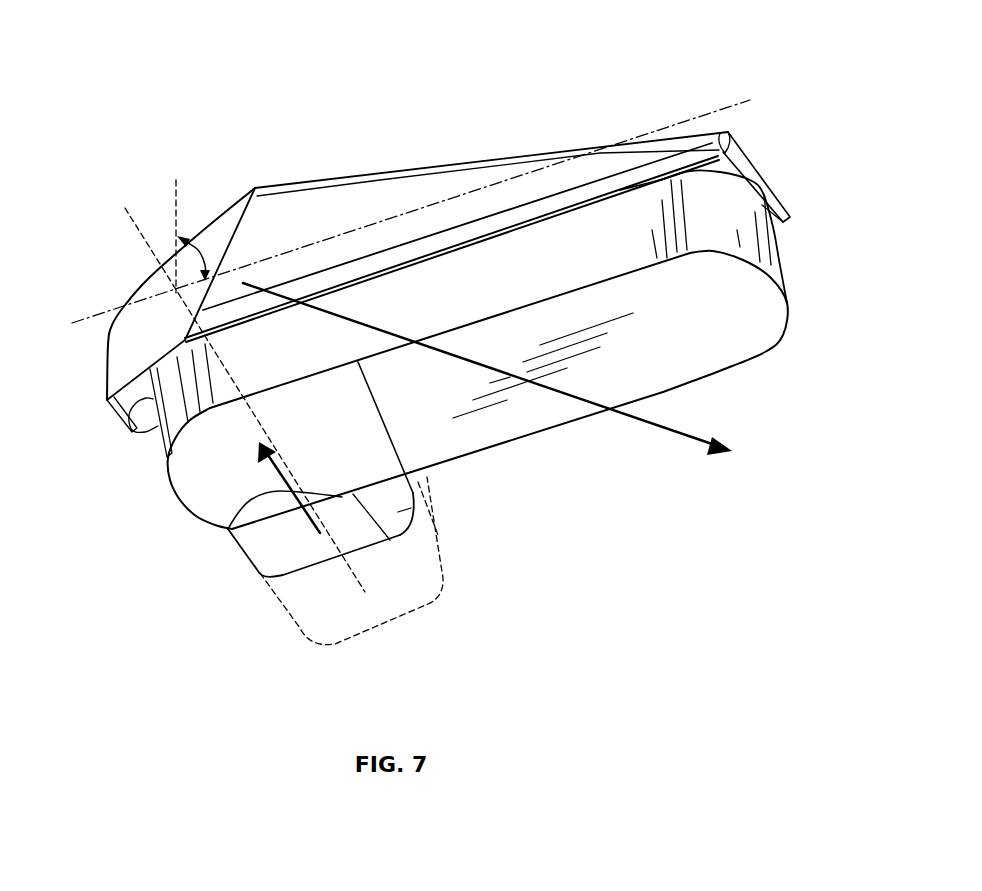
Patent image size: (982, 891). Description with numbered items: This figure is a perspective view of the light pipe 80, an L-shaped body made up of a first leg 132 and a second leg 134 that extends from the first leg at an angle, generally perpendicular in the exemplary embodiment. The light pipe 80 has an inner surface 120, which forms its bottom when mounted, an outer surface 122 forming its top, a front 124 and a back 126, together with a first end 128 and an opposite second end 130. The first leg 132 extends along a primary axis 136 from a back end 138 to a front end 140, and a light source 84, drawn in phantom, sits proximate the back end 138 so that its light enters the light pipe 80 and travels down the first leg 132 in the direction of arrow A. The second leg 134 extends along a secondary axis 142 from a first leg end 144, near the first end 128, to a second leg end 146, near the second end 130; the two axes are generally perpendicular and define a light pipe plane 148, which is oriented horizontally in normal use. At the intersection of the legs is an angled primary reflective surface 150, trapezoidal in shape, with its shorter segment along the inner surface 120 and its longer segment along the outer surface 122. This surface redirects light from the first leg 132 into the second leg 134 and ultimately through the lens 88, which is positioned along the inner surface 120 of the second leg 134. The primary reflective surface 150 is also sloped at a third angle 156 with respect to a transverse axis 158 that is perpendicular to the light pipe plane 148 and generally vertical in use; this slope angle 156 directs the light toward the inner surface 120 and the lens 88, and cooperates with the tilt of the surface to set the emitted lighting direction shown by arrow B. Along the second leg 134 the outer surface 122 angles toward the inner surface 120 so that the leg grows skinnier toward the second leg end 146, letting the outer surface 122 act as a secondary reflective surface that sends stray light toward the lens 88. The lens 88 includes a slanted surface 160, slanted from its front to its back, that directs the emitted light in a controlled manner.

The light pipe 80 is at (187, 58).
The light source 84 is at (357, 622).
The lens 88 is at (762, 342).
The inner surface 120 is at (262, 565).
The outer surface 122 is at (353, 173).
The front 124 is at (443, 188).
The back 126 is at (405, 527).
The first end 128 is at (280, 543).
The second end 130 is at (767, 185).
The first leg 132 is at (403, 510).
The second leg 134 is at (513, 170).
The primary axis 136 is at (127, 220).
The back end 138 is at (365, 553).
The front end 140 is at (125, 403).
The secondary axis 142 is at (85, 317).
The first leg end 144 is at (133, 427).
The second leg end 146 is at (752, 163).
The light pipe plane 148 is at (178, 289).
The primary reflective surface 150 is at (237, 213).
The third angle 156 is at (200, 233).
The transverse axis 158 is at (172, 197).
The slanted surface 160 is at (773, 312).
The arrow A is at (232, 525).
The arrow B is at (657, 427).